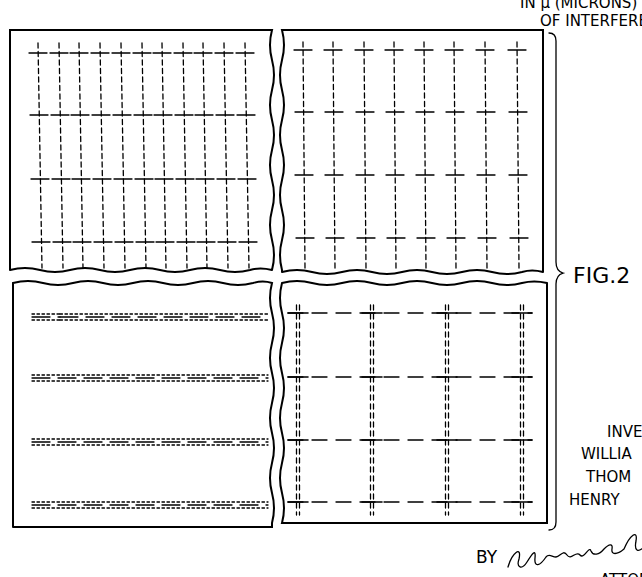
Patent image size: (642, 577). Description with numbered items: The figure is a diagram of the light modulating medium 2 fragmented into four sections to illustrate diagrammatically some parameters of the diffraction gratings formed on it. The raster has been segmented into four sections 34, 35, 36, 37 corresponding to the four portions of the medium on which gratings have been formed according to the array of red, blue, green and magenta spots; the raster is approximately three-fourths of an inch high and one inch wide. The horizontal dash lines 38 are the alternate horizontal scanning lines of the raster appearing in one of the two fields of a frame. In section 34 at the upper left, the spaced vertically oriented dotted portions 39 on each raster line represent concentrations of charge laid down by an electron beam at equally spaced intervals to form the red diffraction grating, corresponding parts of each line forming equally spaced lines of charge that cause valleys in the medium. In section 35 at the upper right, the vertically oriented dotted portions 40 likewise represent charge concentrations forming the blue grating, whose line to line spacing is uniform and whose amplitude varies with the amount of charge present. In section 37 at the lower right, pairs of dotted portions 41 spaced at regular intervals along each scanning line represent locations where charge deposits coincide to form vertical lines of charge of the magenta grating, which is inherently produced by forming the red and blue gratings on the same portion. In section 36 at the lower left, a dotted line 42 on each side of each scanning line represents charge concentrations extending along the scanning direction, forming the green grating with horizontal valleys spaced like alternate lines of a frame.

The test sample pattern 2 is at (286, 20).
The section of the raster 34 is at (195, 31).
The section of the raster 35 is at (431, 31).
The section of the raster 36 is at (163, 528).
The section of the raster 37 is at (353, 524).
The horizontal dash lines 38 is at (253, 54).
The vertically oriented dotted portions 39 is at (59, 63).
The vertically oriented dotted portions 40 is at (332, 57).
The pairs of dotted portions 41 is at (371, 320).
The dotted line 42 is at (41, 334).